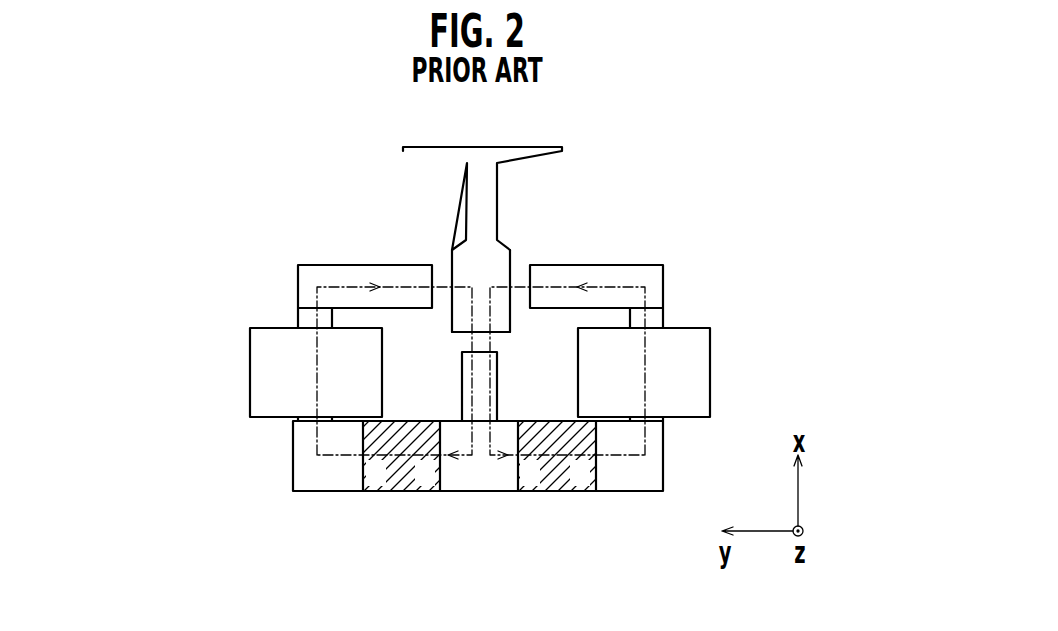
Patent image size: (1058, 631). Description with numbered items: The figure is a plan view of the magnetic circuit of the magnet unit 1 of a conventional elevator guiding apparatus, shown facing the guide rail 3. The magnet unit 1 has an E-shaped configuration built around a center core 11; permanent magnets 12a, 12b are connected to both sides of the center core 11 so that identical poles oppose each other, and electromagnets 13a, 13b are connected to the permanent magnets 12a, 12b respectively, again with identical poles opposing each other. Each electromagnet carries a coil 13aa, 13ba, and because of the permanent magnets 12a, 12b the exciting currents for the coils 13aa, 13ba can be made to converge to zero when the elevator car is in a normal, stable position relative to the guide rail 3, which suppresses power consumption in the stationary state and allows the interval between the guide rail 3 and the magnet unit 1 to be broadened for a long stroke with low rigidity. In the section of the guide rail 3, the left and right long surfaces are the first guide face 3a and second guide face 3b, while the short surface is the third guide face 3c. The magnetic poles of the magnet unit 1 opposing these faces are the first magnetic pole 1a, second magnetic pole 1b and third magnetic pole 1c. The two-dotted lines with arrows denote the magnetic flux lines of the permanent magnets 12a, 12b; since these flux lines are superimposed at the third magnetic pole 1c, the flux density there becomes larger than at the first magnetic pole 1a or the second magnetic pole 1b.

The magnet unit 1 is at (677, 273).
The first magnetic pole 1a is at (410, 273).
The second magnetic pole 1b is at (548, 275).
The third magnetic pole 1c is at (466, 367).
The guide rail 3 is at (465, 192).
The first guide face 3a is at (450, 257).
The second guide face 3b is at (512, 267).
The third guide face 3c is at (498, 335).
The center core 11 is at (477, 477).
The permanent magnet 12a is at (393, 477).
The permanent magnet 12b is at (555, 482).
The electromagnet 13a is at (313, 263).
The coil 13aa is at (277, 340).
The electromagnet 13b is at (637, 265).
The coil 13ba is at (685, 347).